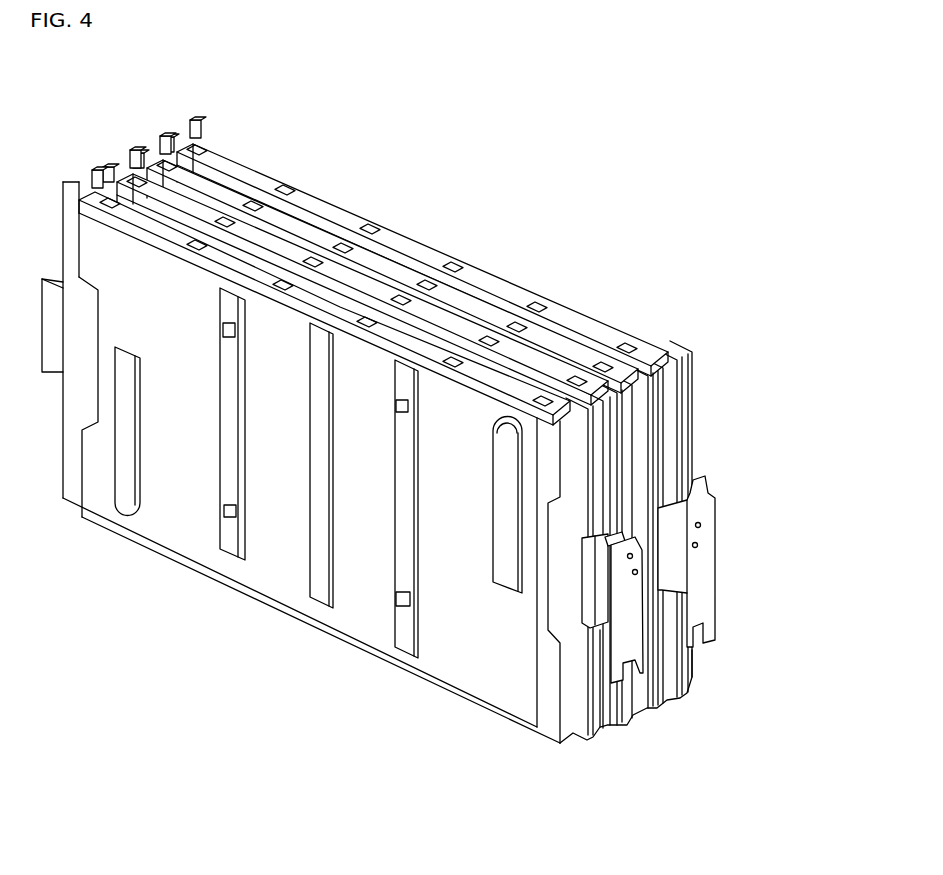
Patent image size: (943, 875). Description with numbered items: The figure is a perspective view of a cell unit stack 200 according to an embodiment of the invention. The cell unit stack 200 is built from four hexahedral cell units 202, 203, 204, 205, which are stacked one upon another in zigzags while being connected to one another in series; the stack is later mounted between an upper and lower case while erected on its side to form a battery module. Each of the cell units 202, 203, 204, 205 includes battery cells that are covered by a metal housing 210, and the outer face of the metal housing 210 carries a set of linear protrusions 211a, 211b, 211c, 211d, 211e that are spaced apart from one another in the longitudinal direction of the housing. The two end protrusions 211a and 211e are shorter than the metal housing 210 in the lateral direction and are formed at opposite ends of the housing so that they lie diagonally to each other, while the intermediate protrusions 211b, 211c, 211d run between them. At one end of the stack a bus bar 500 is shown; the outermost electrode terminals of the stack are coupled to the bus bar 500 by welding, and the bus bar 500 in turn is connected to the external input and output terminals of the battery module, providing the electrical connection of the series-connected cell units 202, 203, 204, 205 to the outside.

The cell unit stack 200 is at (80, 134).
The hexahedral cell unit 202 is at (164, 218).
The hexahedral cell unit 203 is at (296, 247).
The hexahedral cell unit 204 is at (396, 272).
The hexahedral cell unit 205 is at (512, 296).
The metal housing 210 is at (287, 462).
The linear protrusion 211a is at (475, 505).
The linear protrusion 211b is at (408, 635).
The linear protrusion 211c is at (316, 583).
The linear protrusion 211d is at (232, 534).
The linear protrusion 211e is at (125, 486).
The bus bar 500 is at (703, 567).